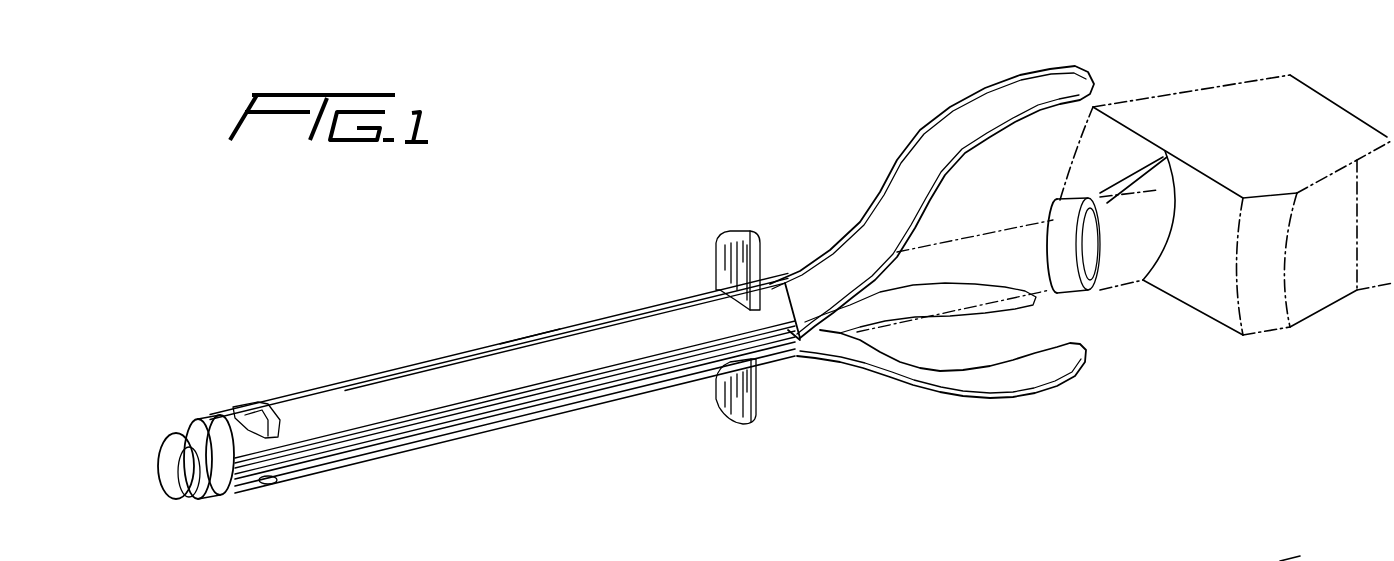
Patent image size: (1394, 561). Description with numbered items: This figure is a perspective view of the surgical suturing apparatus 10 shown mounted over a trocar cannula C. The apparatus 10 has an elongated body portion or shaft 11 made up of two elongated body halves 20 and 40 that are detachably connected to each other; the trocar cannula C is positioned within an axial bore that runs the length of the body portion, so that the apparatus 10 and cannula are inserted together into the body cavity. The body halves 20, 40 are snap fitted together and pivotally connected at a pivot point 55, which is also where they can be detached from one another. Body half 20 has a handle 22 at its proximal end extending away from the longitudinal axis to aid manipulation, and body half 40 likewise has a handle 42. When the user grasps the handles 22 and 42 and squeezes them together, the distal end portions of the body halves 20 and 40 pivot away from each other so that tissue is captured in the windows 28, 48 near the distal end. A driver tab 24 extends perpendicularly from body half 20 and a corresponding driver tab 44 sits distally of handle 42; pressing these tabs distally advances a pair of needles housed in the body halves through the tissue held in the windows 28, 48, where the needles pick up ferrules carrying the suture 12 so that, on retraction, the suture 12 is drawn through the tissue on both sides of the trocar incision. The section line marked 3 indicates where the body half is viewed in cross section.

The surgical suturing apparatus 10 is at (546, 281).
The elongated body portion 11 is at (447, 352).
The suture 12 is at (973, 317).
The body half 20 is at (337, 398).
The handle 22 is at (951, 119).
The driver tab 24 is at (752, 248).
The window 28 is at (238, 410).
The section line 3- 3 is at (150, 476).
The body half 40 is at (385, 450).
The handle 42 is at (1049, 386).
The driver tab 44 is at (757, 405).
The window 48 is at (252, 492).
The pivot point 55 is at (787, 333).
The trocar cannula C is at (1053, 272).